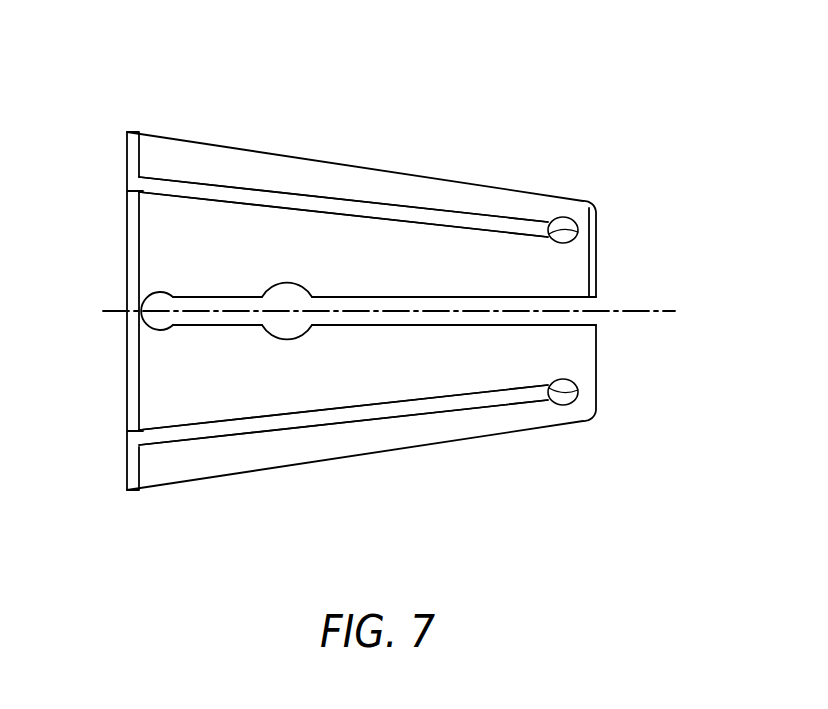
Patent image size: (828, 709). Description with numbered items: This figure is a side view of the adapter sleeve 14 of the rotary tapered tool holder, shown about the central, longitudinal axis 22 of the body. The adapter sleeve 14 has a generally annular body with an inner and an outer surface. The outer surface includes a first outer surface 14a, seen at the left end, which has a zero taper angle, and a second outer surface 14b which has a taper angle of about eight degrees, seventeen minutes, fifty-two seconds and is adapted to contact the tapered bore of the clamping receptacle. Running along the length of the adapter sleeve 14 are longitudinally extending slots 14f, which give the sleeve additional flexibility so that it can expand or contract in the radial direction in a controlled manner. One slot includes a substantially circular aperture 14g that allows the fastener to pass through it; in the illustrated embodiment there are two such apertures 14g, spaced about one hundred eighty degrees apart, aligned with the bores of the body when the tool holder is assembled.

The adapter sleeve 14 is at (375, 259).
The first outer surface 14a is at (137, 131).
The second outer surface 14b is at (351, 160).
The longitudinally extending slots 14f is at (448, 394).
The substantially circular aperture 14g is at (282, 295).
The central, longitudinal axis 22 is at (650, 313).